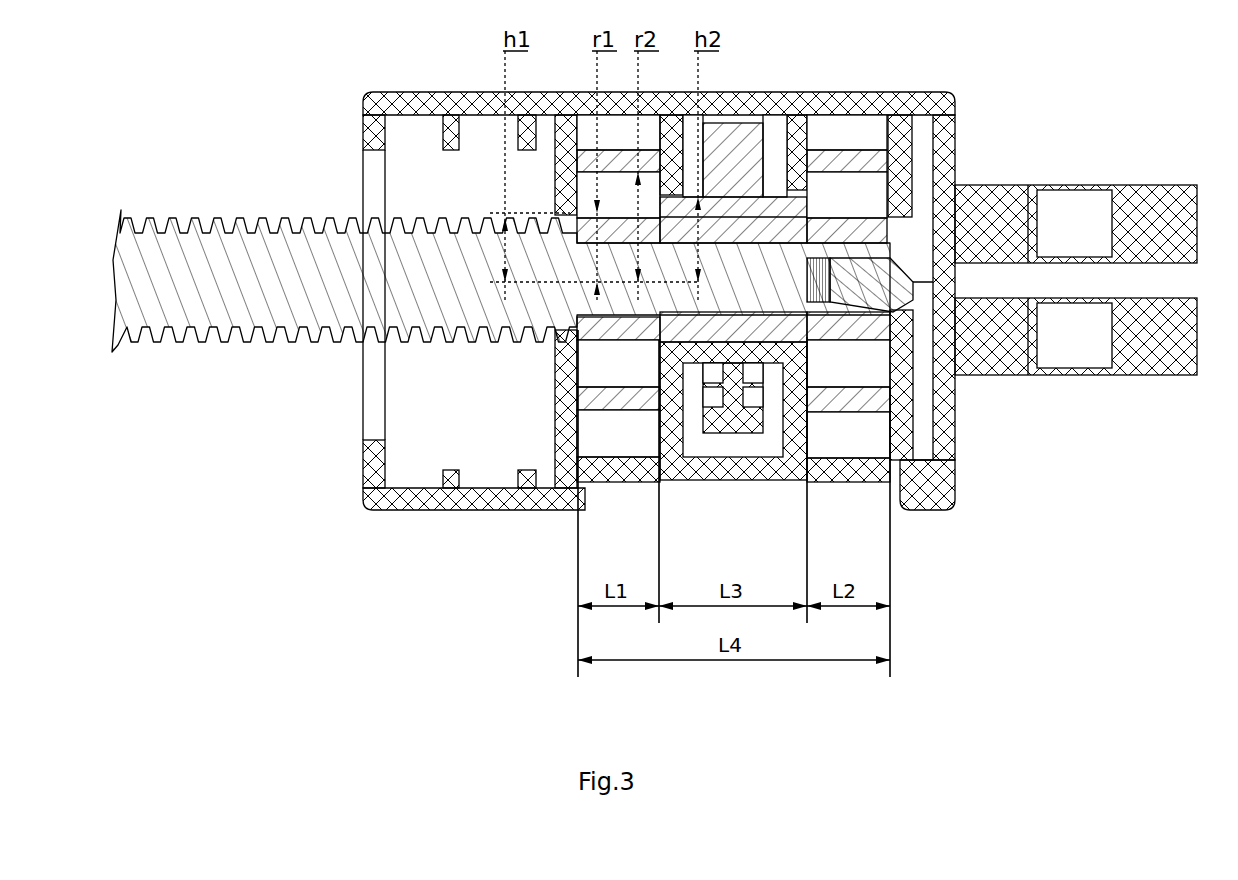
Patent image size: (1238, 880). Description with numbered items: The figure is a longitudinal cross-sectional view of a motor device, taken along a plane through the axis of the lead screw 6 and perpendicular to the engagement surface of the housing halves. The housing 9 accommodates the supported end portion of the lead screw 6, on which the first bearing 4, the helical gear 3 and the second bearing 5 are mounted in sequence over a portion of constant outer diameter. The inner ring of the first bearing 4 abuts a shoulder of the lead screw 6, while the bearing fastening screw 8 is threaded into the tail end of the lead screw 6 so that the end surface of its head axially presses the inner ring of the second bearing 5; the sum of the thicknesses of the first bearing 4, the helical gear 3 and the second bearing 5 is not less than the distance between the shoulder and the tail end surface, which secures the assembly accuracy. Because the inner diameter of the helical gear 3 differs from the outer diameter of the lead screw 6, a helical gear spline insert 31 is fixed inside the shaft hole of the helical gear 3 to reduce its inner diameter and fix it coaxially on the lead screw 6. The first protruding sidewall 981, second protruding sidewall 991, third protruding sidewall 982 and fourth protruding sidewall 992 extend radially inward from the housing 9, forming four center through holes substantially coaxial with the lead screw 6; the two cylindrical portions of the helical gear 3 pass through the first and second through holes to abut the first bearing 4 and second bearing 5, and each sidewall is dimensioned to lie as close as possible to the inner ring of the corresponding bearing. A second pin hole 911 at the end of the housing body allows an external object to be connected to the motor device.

The housing 9 is at (410, 100).
The helical gear 3 is at (737, 138).
The second protruding sidewall 991 is at (793, 152).
The second bearing 5 is at (862, 160).
The fourth protruding sidewall 992 is at (897, 193).
The bearing fastening screw 8 is at (897, 273).
The lead screw 6 is at (348, 268).
The first bearing 4 is at (613, 402).
The third protruding sidewall 982 is at (567, 383).
The first protruding sidewall 981 is at (670, 442).
The helical gear spline insert 31 is at (758, 332).
The second pin hole 911 is at (1075, 353).